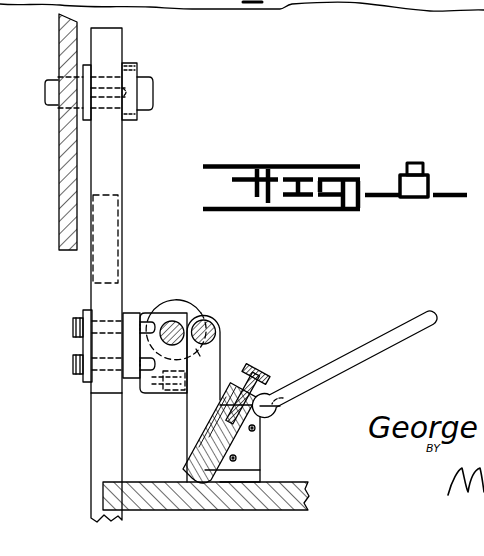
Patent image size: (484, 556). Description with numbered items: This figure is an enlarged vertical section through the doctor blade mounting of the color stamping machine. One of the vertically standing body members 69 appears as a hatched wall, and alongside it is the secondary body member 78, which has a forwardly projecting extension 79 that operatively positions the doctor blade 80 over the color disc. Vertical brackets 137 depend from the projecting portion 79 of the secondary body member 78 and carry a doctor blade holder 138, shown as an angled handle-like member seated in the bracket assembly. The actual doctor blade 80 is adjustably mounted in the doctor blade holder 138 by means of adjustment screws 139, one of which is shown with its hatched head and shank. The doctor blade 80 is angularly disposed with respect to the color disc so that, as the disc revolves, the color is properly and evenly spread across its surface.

The body member 69 is at (58, 143).
The secondary body member 78 is at (91, 421).
The forwardly projecting extension 79 is at (122, 242).
The doctor blade 80 is at (187, 473).
The vertical bracket 137 is at (217, 354).
The doctor blade holder 138 is at (287, 405).
The adjustment screw 139 is at (264, 368).